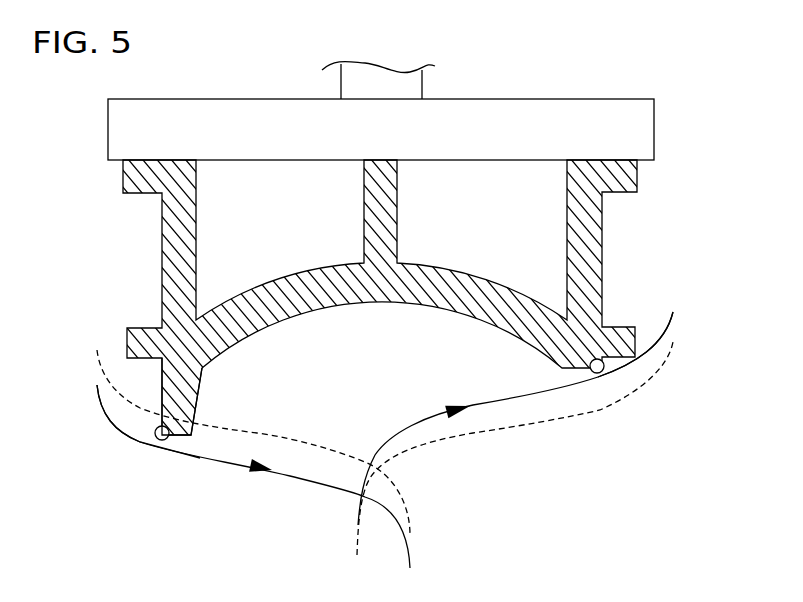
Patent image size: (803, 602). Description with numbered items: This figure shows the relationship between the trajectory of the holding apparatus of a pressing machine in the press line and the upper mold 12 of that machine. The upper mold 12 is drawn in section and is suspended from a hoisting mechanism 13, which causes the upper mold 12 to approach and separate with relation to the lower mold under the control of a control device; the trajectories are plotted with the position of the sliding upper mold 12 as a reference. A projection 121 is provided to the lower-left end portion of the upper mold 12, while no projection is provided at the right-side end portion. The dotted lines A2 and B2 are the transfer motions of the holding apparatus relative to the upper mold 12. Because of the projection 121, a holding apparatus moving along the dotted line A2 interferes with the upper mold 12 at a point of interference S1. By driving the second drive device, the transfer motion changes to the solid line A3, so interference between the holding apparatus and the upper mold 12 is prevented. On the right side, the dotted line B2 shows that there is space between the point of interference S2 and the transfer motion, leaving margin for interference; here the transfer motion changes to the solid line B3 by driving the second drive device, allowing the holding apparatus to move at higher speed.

The upper mold 12 is at (632, 181).
The hoisting mechanism 13 is at (415, 85).
The projection 121 is at (186, 400).
The point of interference S1 is at (147, 458).
The point of interference S2 is at (622, 389).
The dotted line (transfer motion trajectory) A2 is at (238, 433).
The solid line (transfer motion trajectory) A3 is at (306, 481).
The dotted line (transfer motion trajectory) B2 is at (585, 420).
The solid line (transfer motion trajectory) B3 is at (534, 394).